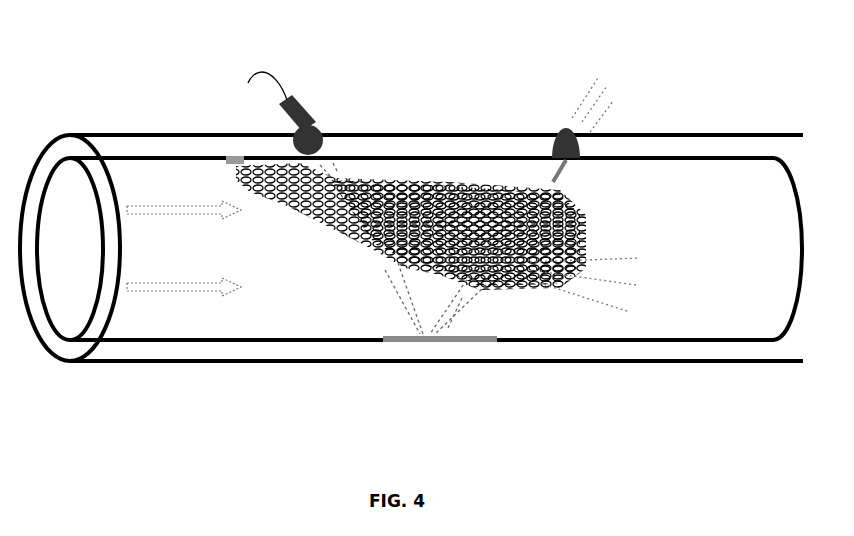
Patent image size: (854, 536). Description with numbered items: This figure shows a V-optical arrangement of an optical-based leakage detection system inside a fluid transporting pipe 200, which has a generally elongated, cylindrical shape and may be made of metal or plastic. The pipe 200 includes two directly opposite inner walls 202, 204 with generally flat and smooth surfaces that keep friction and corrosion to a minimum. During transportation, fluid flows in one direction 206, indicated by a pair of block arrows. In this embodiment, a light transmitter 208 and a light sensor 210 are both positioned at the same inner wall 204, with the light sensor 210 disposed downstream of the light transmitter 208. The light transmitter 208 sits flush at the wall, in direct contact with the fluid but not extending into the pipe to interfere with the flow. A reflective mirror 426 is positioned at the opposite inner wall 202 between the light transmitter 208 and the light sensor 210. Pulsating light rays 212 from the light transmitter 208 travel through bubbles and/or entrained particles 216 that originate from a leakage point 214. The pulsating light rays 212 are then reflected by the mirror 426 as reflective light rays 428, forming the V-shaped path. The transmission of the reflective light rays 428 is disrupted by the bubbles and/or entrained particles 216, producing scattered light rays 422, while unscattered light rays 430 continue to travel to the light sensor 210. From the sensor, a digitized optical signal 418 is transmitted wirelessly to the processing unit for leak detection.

The fluid transporting pipe 200 is at (148, 129).
The inner wall 202 is at (764, 331).
The inner wall 204 is at (736, 163).
The fluid flow direction 206 is at (184, 248).
The light transmitter 208 is at (313, 106).
The light sensor 210 is at (555, 122).
The pulsating light rays 212 is at (400, 307).
The leakage point 214 is at (235, 150).
The bubbles and/or entrained particles 216 is at (415, 192).
The digitized optical signal 418 is at (588, 74).
The scattered light rays 422 is at (645, 276).
The reflective mirror 426 is at (422, 347).
The reflective light rays 428 is at (470, 318).
The unscattered light rays 430 is at (563, 180).